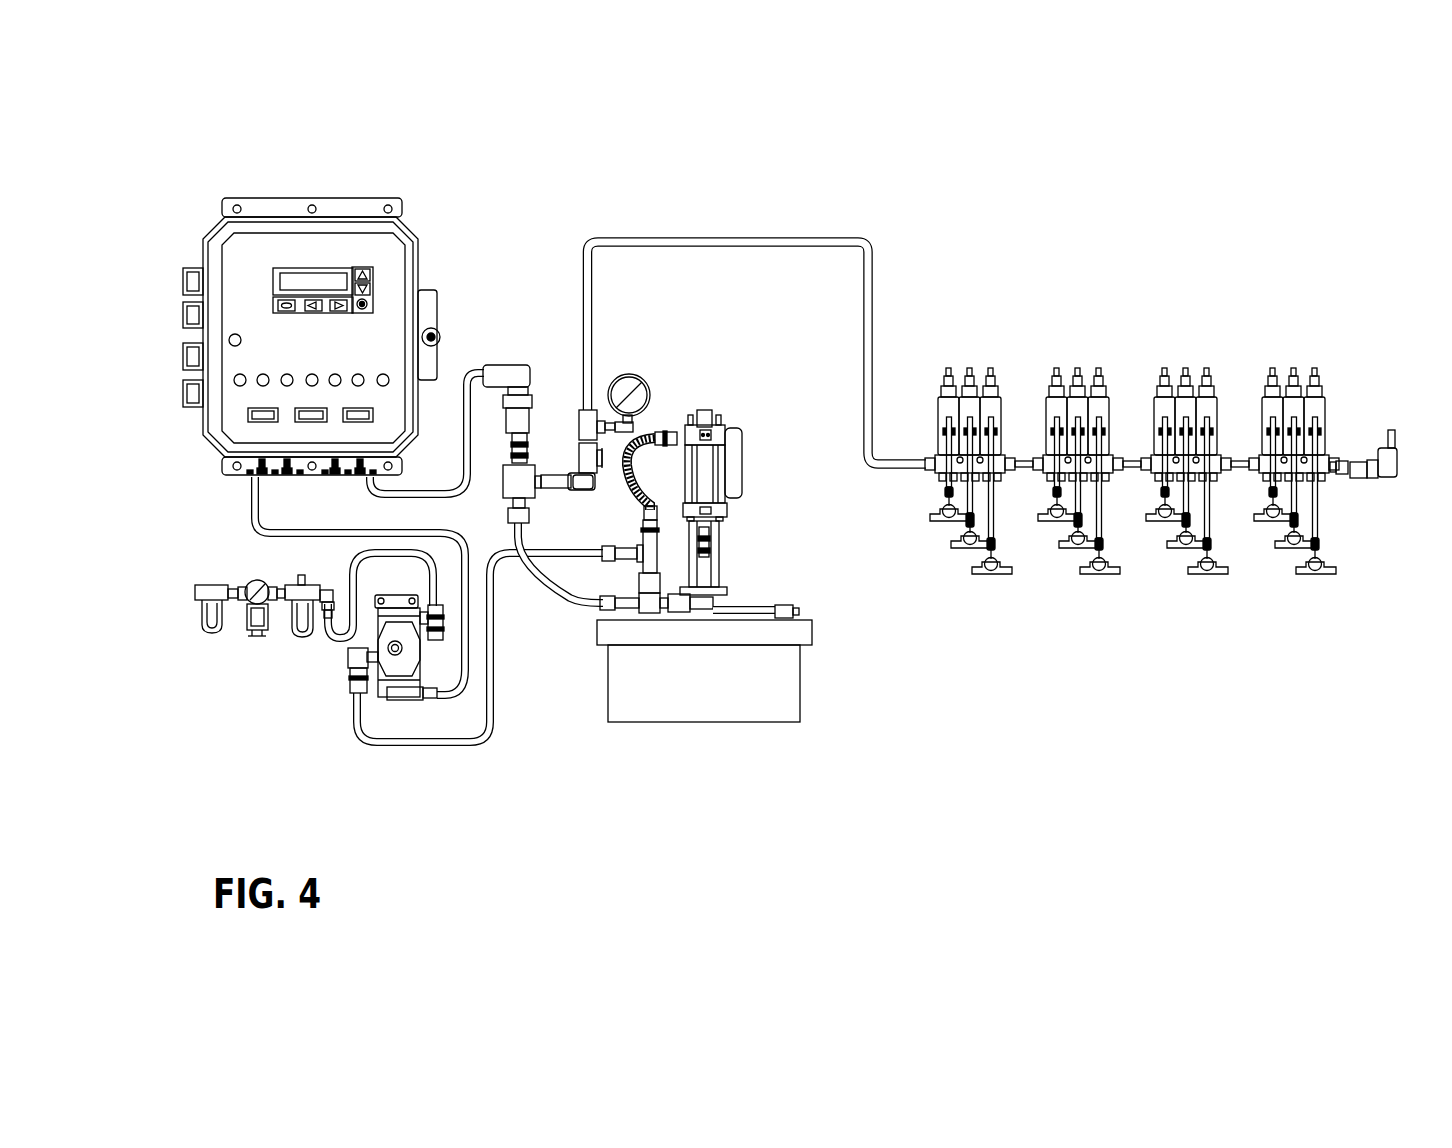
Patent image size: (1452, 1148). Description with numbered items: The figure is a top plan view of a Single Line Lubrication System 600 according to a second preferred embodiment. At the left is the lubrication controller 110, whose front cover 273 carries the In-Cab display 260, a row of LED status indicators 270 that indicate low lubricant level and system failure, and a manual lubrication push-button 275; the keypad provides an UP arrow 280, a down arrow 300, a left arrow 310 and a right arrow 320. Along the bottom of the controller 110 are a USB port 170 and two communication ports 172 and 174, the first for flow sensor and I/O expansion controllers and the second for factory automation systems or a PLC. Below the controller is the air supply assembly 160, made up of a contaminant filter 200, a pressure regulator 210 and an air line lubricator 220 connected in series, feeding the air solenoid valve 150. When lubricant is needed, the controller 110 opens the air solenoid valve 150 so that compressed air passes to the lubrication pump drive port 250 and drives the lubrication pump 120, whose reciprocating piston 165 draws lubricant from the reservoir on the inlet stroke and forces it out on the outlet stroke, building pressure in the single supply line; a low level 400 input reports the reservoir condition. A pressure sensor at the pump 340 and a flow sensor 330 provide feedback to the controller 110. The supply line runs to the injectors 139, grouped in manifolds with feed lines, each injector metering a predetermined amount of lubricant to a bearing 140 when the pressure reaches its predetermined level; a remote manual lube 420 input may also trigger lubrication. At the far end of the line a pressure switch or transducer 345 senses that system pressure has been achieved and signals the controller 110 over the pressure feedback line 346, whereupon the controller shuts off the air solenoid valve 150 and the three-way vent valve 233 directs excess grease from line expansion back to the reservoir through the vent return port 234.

The lubrication controller 110 is at (360, 313).
The lubrication pump 120 is at (756, 490).
The injector 139 is at (907, 362).
The bearing 140 is at (1133, 515).
The air solenoid valve 150 is at (400, 668).
The air supply assembly 160 is at (248, 669).
The reciprocating piston 165 is at (711, 540).
The USB port 170 is at (374, 415).
The communication port 172 is at (260, 422).
The communications port 174 is at (312, 421).
The contaminant filter 200 is at (210, 635).
The pressure regulator 210 is at (262, 638).
The air line lubricator 220 is at (303, 638).
The 3-way vent valve 233 is at (646, 605).
The vent return port 234 is at (796, 610).
The lubrication pump drive port 250 is at (658, 436).
The In-Cab display 260 is at (333, 246).
The LED status indicator 270 is at (273, 270).
The front cover 273 is at (403, 292).
The manual lubrication push-button 275 is at (238, 334).
The UP arrow 280 is at (368, 270).
The down arrow 300 is at (376, 281).
The left arrow 310 is at (349, 313).
The right arrow 320 is at (322, 313).
The flow sensor 330 is at (505, 486).
The pressure sensor/transducer at pump 340 is at (523, 375).
The pressure switch or transducer 345 is at (1400, 452).
The pressure feedback line 346 is at (1392, 430).
The low level 400 is at (750, 625).
The remote manual lube 420 is at (1215, 447).
The Single Line Lubrication System 600 is at (815, 197).